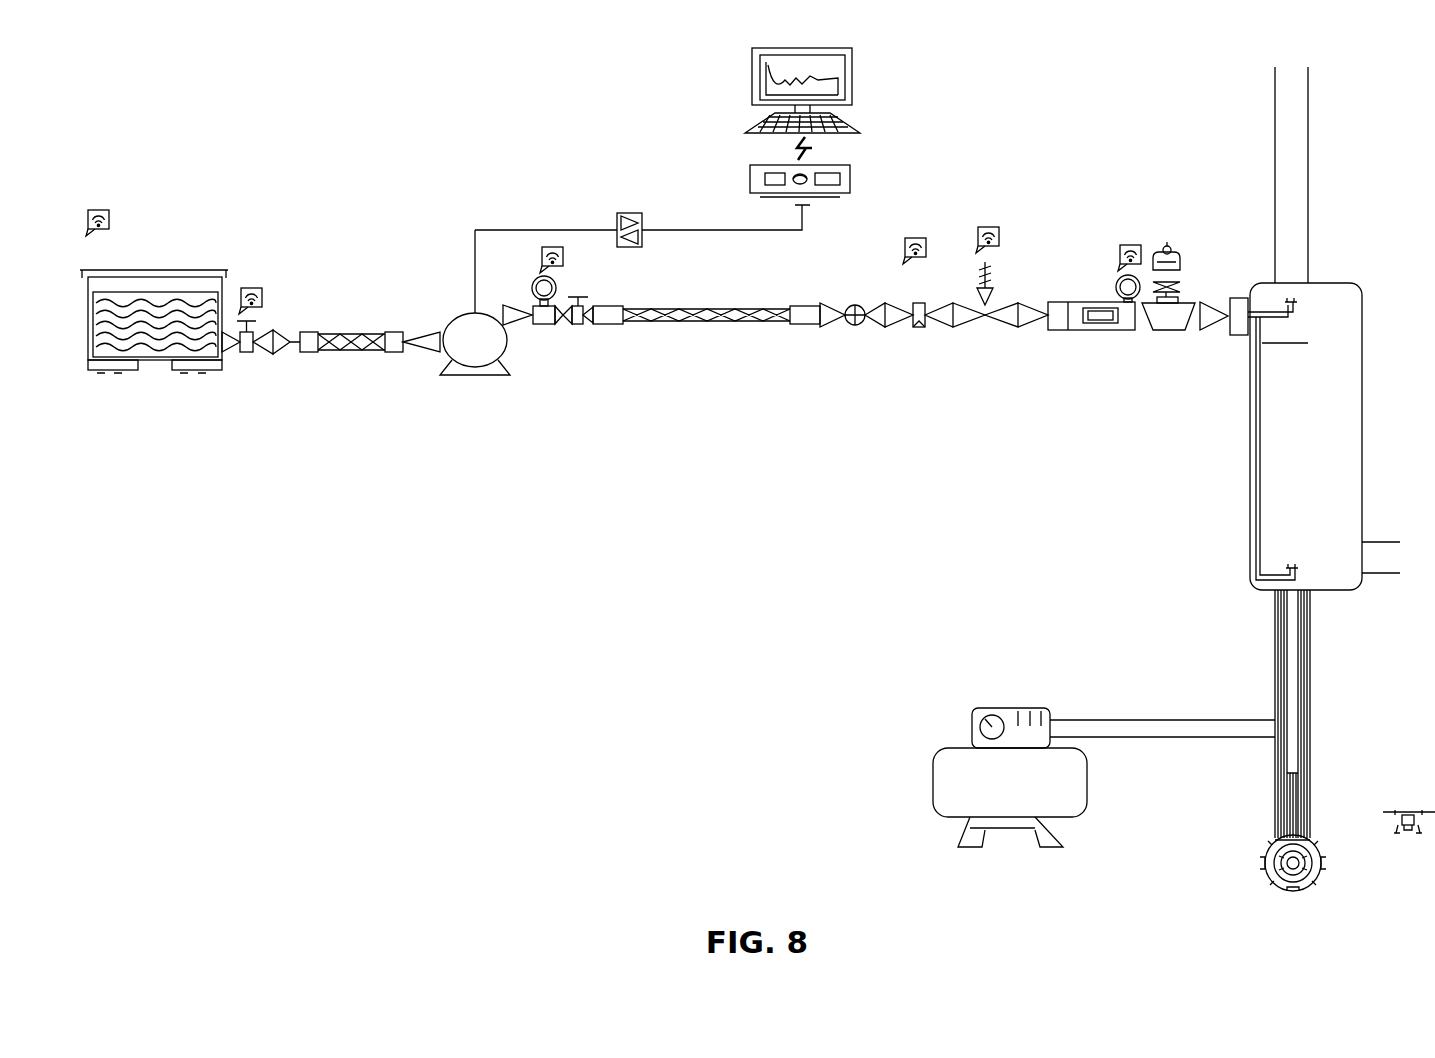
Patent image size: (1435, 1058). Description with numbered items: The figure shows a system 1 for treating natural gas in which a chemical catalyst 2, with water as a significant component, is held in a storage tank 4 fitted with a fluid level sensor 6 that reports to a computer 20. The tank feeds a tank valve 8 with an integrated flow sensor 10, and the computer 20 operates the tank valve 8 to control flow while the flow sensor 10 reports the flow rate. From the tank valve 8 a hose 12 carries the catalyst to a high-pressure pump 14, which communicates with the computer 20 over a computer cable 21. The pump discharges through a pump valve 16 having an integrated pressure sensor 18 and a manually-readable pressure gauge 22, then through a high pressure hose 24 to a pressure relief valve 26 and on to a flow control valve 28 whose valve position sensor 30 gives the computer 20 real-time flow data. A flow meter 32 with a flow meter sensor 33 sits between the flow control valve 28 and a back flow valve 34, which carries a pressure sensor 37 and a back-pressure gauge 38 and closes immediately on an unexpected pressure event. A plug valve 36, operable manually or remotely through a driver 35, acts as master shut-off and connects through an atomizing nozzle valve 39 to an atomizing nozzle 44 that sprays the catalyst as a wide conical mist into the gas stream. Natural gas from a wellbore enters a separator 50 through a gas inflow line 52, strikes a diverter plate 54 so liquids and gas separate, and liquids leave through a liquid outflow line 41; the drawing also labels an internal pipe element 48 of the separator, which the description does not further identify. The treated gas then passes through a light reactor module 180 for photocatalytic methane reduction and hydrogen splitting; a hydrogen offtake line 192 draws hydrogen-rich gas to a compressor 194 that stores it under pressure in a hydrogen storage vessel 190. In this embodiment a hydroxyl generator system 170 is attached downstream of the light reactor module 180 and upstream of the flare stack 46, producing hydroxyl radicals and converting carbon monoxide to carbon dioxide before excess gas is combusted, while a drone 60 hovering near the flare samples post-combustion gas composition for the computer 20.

The system 1 is at (183, 88).
The chemical catalyst 2 is at (200, 310).
The storage tank 4 is at (175, 270).
The fluid level sensor 6 is at (98, 210).
The tank valve 8 is at (247, 354).
The flow sensor 10 is at (253, 288).
The hose 12 is at (348, 332).
The high-pressure pump 14 is at (460, 313).
The pump valve 16 is at (578, 297).
The pressure sensor 18 is at (548, 247).
The computer 20 is at (750, 172).
The computer cable 21 is at (497, 230).
The pressure gauge 22 is at (532, 288).
The high pressure hose 24 is at (722, 309).
The pressure relief valve 26 is at (855, 305).
The flow control valve 28 is at (920, 327).
The valve position sensor 30 is at (912, 238).
The flow meter 32 is at (988, 327).
The flow meter sensor 33 is at (987, 227).
The back flow valve 34 is at (1055, 302).
The driver 35 is at (1167, 246).
The plug valve 36 is at (1168, 330).
The pressure sensor 37 is at (1130, 245).
The back-pressure gauge 38 is at (1117, 280).
The atomizing nozzle valve 39 is at (1238, 298).
The liquid outflow line 41 is at (1380, 574).
The atomizing nozzle 44 is at (1286, 302).
The flare stack 46 is at (1266, 850).
The inner pipe 48 is at (1256, 507).
The separator 50 is at (1250, 453).
The gas inflow line 52 is at (1275, 122).
The diverter plate 54 is at (1290, 343).
The drone 60 is at (1405, 812).
The hydroxyl generator system 170 is at (1312, 812).
The light reactor module 180 is at (1266, 690).
The hydrogen storage vessel 190 is at (1087, 785).
The hydrogen offtake line 192 is at (1112, 720).
The compressor 194 is at (998, 708).